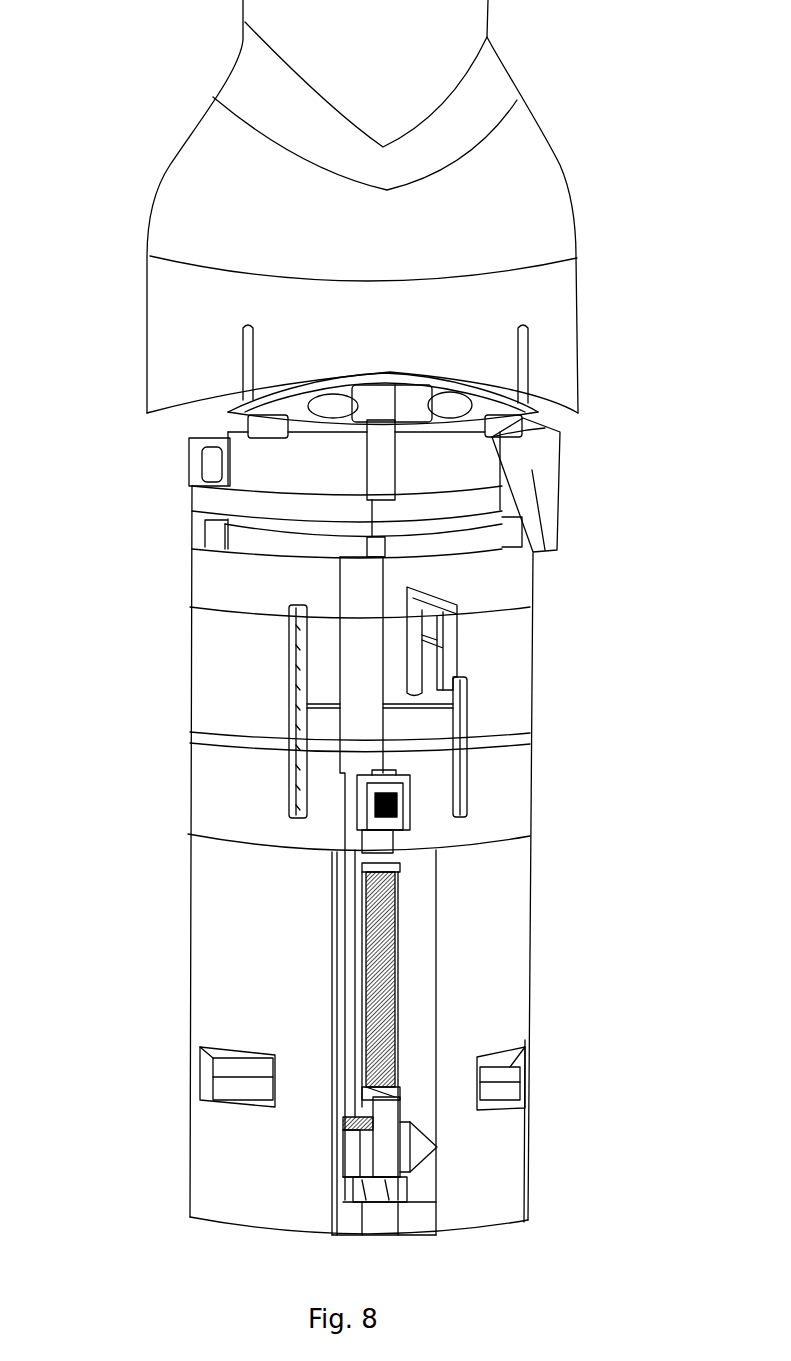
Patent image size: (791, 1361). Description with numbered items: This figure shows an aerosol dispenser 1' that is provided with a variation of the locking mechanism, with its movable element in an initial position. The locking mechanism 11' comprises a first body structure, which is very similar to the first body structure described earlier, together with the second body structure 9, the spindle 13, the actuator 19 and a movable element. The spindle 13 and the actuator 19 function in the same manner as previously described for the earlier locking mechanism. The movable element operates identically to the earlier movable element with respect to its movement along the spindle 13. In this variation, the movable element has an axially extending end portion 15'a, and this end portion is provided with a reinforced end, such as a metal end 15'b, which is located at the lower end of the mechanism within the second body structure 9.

The aerosol dispenser 1' is at (413, 208).
The second body structure 9 is at (528, 870).
The locking mechanism 11' is at (497, 1042).
The spindle 13 is at (393, 977).
The axially extending end portion 15'a is at (254, 1149).
The metal end 15'b is at (242, 1049).
The actuator 19 is at (357, 810).